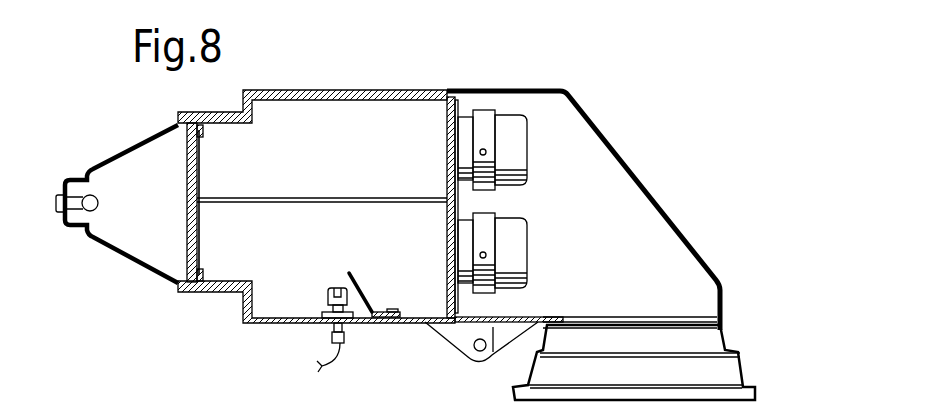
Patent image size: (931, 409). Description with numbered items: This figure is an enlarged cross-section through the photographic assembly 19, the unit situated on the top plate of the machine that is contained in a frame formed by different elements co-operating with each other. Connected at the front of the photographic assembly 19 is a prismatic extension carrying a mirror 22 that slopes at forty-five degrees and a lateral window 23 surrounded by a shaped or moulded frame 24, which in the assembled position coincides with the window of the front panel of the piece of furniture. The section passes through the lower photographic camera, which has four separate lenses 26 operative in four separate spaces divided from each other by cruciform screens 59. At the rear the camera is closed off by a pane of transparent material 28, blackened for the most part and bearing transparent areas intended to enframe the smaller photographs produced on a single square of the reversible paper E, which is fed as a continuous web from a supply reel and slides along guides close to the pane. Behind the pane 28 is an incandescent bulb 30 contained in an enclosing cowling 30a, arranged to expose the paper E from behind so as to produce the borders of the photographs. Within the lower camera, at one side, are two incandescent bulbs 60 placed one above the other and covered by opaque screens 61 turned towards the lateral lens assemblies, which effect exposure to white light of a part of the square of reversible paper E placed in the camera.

The photographic assembly 19 is at (212, 299).
The mirror 22 is at (637, 171).
The lateral window 23 is at (625, 320).
The shaped frame 24 is at (547, 338).
The separate lenses 26 is at (517, 130).
The pane of transparent material 28 is at (187, 225).
The incandescent bulb 30 is at (97, 203).
The enclosing cowling 30a is at (129, 148).
The cruciform screens 59 is at (373, 201).
The incandescent bulbs 60 is at (340, 289).
The opaque screens 61 is at (364, 290).
The reversible paper E is at (200, 230).